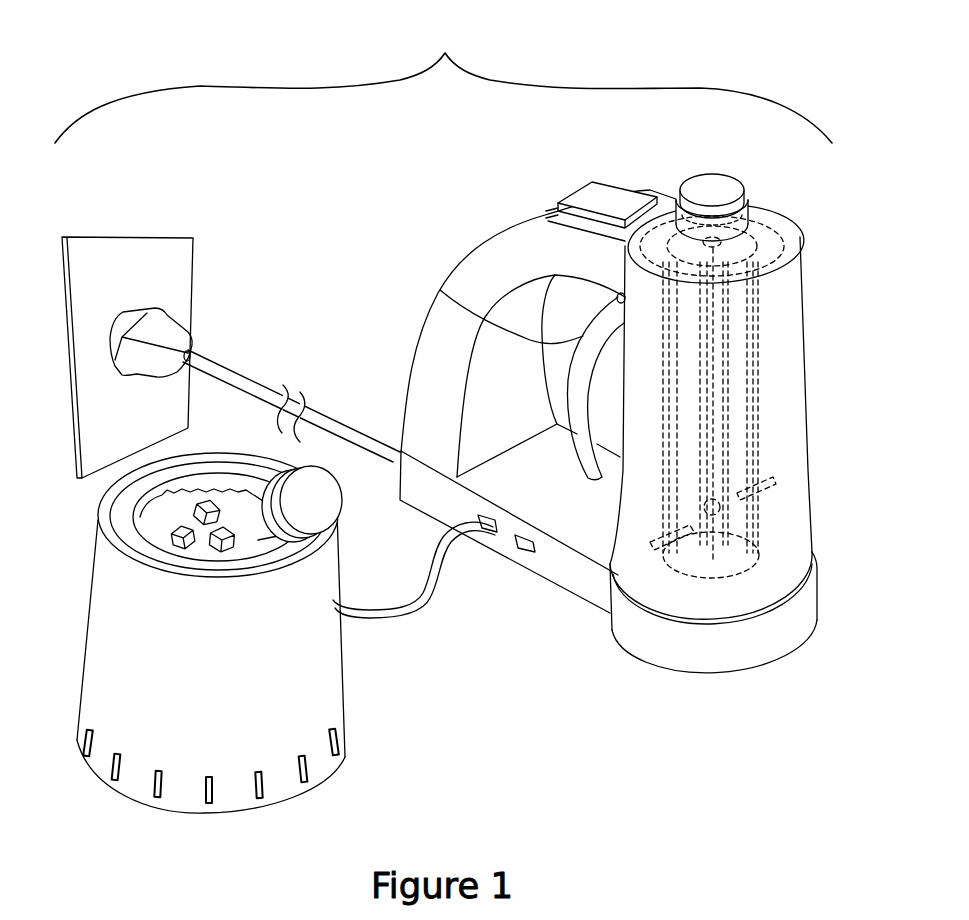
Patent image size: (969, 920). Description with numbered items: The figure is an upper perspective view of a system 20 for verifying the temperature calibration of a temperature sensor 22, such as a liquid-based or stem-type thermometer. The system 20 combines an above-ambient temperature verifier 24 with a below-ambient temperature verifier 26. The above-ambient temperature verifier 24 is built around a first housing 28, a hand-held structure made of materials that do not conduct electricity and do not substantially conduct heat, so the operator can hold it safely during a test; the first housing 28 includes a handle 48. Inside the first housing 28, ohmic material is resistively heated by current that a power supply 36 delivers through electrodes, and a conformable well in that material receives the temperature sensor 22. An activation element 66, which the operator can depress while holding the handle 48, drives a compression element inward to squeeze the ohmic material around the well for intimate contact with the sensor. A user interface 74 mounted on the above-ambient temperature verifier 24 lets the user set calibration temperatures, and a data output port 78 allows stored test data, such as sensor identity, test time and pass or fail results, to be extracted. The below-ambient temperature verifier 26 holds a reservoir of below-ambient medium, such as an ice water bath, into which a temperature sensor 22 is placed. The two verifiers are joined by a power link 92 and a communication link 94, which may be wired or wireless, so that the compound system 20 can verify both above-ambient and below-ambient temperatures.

The system 20 is at (443, 79).
The temperature sensor 22 is at (727, 193).
The above-ambient temperature verifier 24 is at (457, 227).
The below-ambient temperature verifier 26 is at (390, 730).
The first housing 28 is at (805, 283).
The power supply 36 is at (193, 237).
The handle 48 is at (412, 352).
The activation element 66 is at (440, 290).
The user interface 74 is at (613, 195).
The data output port 78 is at (537, 550).
The power link 92 is at (414, 590).
The communication link 94 is at (353, 620).